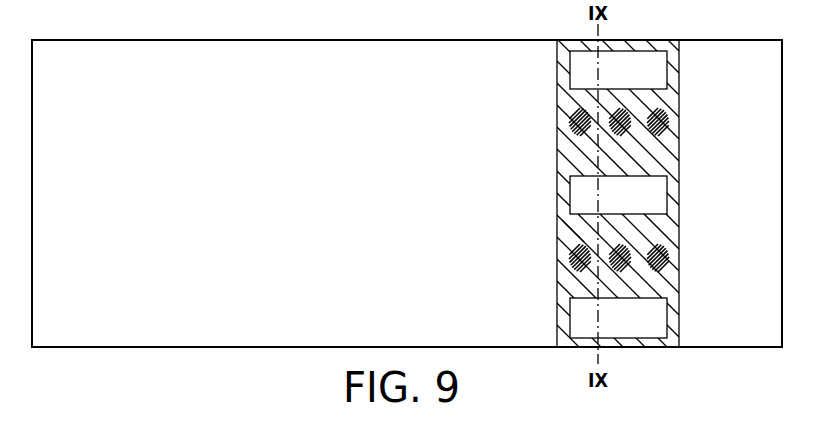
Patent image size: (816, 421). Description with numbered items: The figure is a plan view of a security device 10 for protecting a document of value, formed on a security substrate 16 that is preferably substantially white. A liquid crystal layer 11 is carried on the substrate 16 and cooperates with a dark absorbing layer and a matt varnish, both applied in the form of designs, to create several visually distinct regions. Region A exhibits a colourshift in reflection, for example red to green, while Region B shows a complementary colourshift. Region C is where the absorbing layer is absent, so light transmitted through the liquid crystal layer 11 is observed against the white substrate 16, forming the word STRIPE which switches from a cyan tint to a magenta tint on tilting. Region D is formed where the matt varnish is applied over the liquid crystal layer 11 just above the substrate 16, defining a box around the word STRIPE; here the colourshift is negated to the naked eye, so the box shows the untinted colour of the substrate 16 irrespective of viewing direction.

The security device 10 is at (636, 40).
The liquid crystal layer 11 is at (651, 162).
The security substrate 16 is at (73, 347).
The Region A is at (569, 222).
The Region B is at (573, 117).
The Region C is at (665, 68).
The Region D is at (570, 63).